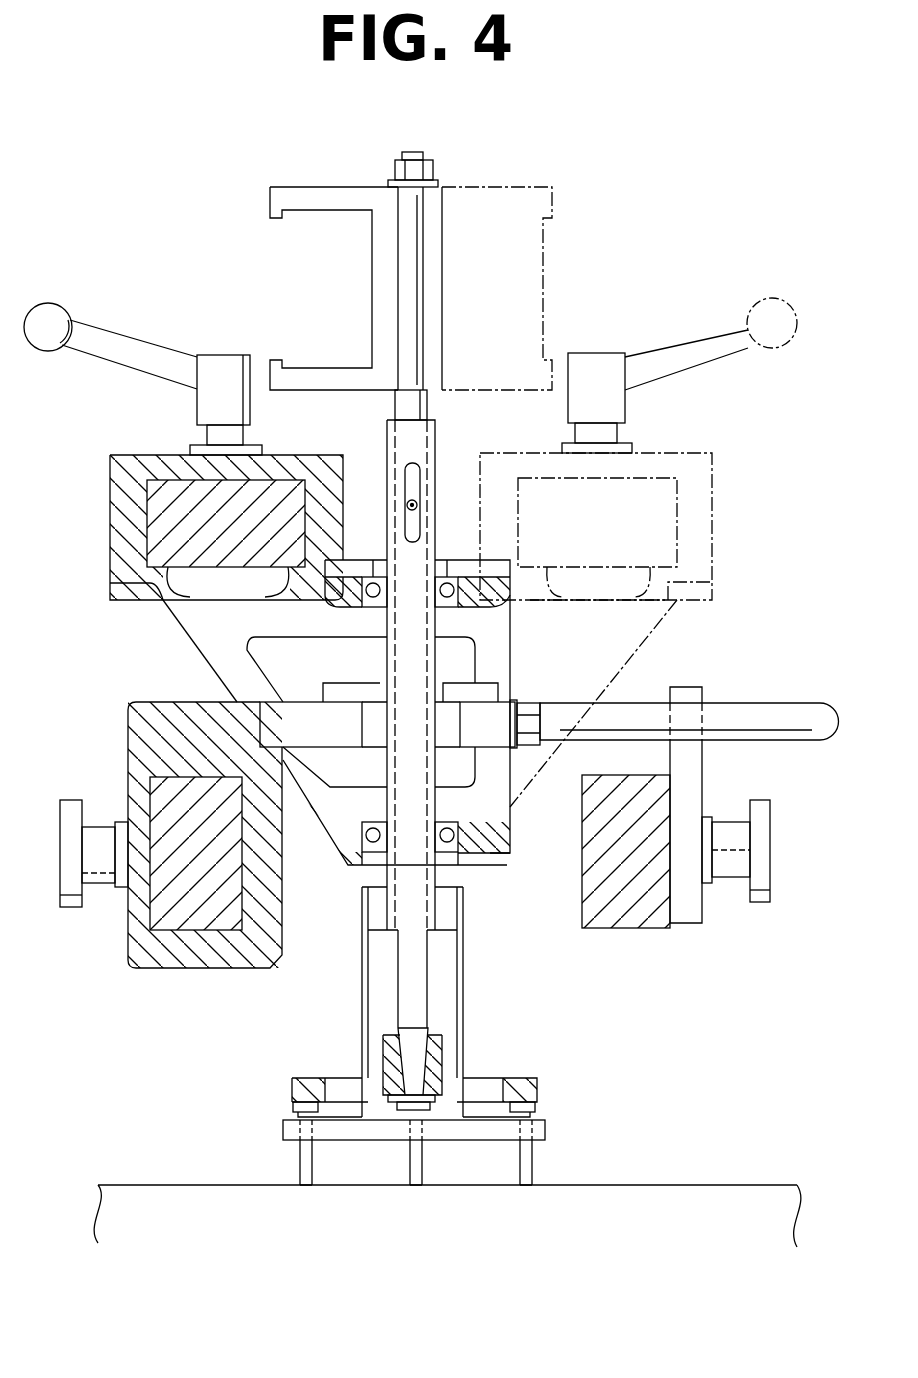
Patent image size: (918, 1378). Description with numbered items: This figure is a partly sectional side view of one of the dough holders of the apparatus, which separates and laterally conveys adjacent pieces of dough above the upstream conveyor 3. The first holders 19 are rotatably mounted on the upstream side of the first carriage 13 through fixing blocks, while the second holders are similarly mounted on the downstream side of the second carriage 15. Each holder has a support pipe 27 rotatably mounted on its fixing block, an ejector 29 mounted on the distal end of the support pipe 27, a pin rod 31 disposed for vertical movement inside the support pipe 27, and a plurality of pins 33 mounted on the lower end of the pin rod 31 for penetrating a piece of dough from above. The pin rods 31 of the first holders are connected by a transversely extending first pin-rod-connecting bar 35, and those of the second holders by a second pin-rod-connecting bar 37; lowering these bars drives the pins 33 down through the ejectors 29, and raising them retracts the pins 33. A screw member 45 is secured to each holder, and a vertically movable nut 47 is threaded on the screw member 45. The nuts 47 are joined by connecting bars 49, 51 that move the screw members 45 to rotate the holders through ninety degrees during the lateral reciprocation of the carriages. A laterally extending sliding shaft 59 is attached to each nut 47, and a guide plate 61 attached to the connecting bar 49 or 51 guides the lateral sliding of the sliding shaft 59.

The upstream conveyor 3 is at (165, 1202).
The first carriage 13 is at (163, 528).
The second carriage 15 is at (667, 510).
The first holder 19 is at (560, 1100).
The support pipe 27 is at (437, 873).
The ejector 29 is at (545, 1130).
The pin rod 31 is at (430, 975).
The pins 33 is at (532, 1167).
The first pin-rod-connecting bar 35 is at (303, 270).
The second pin-rod-connecting bar 37 is at (527, 253).
The screw member 45 is at (382, 662).
The nut 47 is at (313, 693).
The connecting bar 49 is at (183, 907).
The connecting bar 51 is at (633, 917).
The sliding shaft 59 is at (730, 703).
The guide plate 61 is at (693, 775).